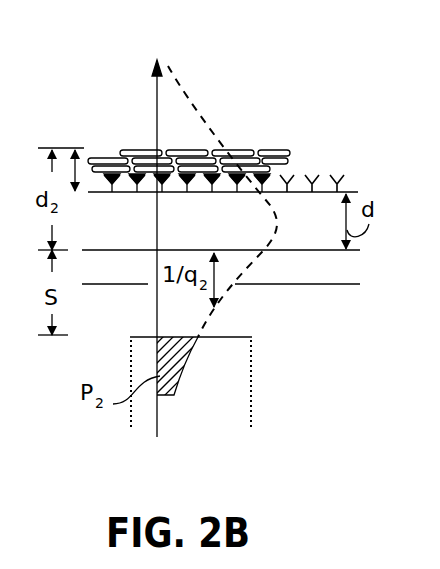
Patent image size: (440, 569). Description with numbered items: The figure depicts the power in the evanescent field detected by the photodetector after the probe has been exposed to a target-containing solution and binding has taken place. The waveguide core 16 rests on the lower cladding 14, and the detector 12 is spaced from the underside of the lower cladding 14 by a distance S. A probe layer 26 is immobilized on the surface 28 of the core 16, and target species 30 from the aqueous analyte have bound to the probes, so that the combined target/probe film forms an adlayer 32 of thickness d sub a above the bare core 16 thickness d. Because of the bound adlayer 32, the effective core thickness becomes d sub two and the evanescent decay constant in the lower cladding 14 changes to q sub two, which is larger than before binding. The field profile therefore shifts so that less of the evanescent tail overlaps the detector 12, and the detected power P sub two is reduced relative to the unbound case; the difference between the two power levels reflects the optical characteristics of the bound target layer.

The detector 12 is at (256, 417).
The lower cladding 14 is at (325, 279).
The waveguide core 16 is at (325, 236).
The probe layer 26 is at (318, 172).
The surface 28 is at (355, 190).
The target species 30 is at (238, 148).
The adlayer 32 is at (84, 149).